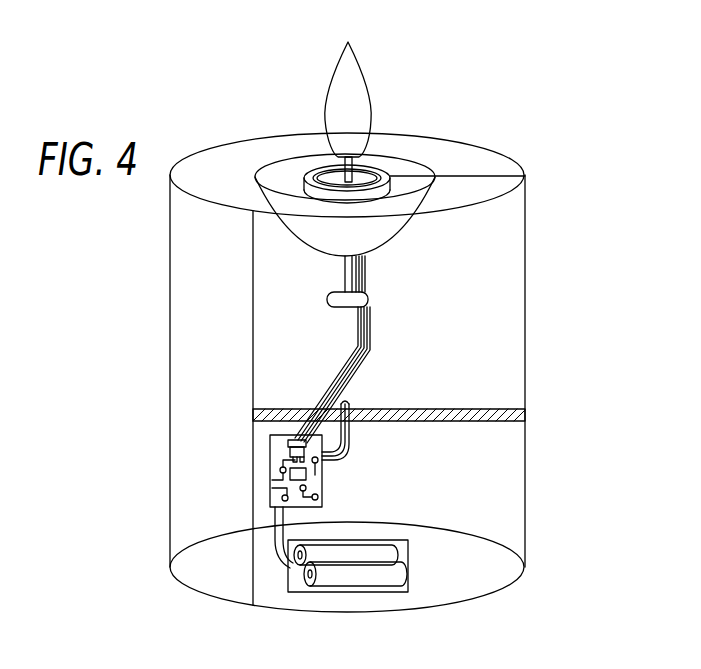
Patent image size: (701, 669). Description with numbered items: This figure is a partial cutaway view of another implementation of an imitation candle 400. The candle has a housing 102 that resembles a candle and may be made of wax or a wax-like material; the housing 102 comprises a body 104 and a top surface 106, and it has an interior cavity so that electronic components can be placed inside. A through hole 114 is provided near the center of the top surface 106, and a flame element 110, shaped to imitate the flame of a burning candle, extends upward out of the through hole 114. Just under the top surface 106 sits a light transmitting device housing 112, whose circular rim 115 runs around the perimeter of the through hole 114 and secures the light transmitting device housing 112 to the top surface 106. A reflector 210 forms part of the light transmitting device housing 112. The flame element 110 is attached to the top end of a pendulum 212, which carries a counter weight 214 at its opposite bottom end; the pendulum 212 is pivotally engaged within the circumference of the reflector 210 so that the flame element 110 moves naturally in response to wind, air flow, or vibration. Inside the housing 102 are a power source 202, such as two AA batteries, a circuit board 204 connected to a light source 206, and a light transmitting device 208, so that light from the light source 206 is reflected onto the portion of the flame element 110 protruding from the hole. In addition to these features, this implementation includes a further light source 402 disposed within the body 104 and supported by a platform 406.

The imitation candle 400 is at (131, 110).
The housing 102 is at (170, 244).
The body 104 is at (198, 352).
The top surface 106 is at (218, 157).
The flame element 110 is at (352, 87).
The light transmitting device housing 112 is at (407, 200).
The through hole 114 is at (330, 173).
The circular rim 115 is at (382, 170).
The power source 202 is at (335, 580).
The circuit board 204 is at (285, 497).
The light source 206 is at (290, 449).
The light transmitting device 208 is at (333, 378).
The reflector 210 is at (383, 230).
The pendulum 212 is at (343, 265).
The counter weight 214 is at (327, 294).
The light source 402 is at (343, 403).
The platform 406 is at (477, 420).